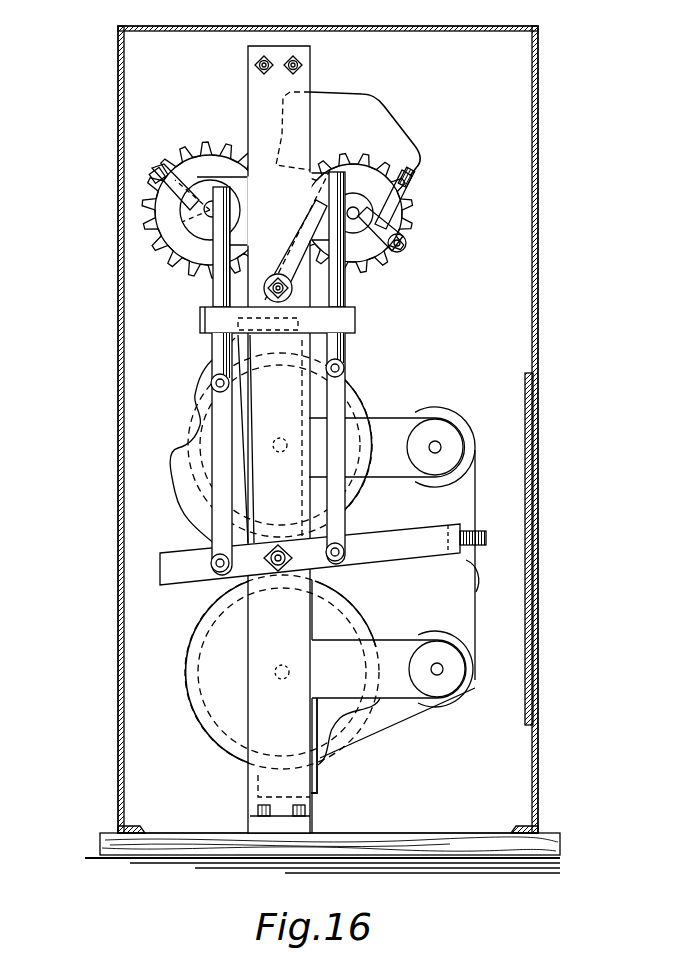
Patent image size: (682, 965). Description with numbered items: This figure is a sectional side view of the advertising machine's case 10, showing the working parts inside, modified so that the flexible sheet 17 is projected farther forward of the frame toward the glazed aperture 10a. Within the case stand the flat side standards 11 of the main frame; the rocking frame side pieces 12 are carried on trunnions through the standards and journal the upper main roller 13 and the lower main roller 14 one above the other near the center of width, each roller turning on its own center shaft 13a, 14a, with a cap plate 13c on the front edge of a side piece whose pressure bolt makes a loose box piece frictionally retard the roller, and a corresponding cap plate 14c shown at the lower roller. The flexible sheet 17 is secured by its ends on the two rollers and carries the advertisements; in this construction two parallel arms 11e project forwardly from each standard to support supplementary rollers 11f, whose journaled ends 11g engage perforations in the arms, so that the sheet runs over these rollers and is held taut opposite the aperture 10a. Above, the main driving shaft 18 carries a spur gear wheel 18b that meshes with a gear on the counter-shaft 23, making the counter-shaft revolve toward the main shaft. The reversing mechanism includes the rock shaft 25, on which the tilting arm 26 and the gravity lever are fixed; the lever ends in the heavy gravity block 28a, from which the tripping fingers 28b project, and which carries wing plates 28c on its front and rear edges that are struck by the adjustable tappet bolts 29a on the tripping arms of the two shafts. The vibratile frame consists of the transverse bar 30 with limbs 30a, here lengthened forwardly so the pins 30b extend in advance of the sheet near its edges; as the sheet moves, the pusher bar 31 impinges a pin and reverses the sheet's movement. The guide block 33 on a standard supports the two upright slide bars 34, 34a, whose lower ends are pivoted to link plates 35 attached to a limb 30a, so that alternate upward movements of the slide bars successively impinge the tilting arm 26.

The case 10 is at (537, 282).
The glazed aperture 10a is at (531, 516).
The side standard 11 is at (248, 122).
The arm 11e is at (408, 422).
The supplementary roller 11f is at (468, 452).
The journaled end 11g is at (442, 446).
The rocking frame side piece 12 is at (225, 350).
The upper main roller 13 is at (355, 430).
The center shaft 13a is at (281, 452).
The cap plate 13c is at (183, 483).
The lower main roller 14 is at (208, 718).
The center shaft 14a is at (287, 660).
The cam edge 14c is at (358, 612).
The flexible sheet 17 is at (434, 727).
The main driving shaft 18 is at (210, 210).
The spur gear wheel 18b is at (178, 263).
The counter-shaft 23 is at (380, 216).
The rock shaft 25 is at (292, 288).
The tilting arm 26 is at (315, 207).
The gravity block 28a is at (395, 119).
The tripping finger 28b is at (256, 65).
The wing plate 28c is at (418, 176).
The tappet bolt 29a is at (406, 245).
The transverse bar 30 is at (456, 556).
The limb 30a is at (188, 595).
The pin 30b is at (480, 534).
The pusher bar 31 is at (478, 567).
The guide block 33 is at (357, 318).
The slide bar 34 is at (350, 352).
The slide bar 34a is at (243, 343).
The link plate 35 is at (222, 520).